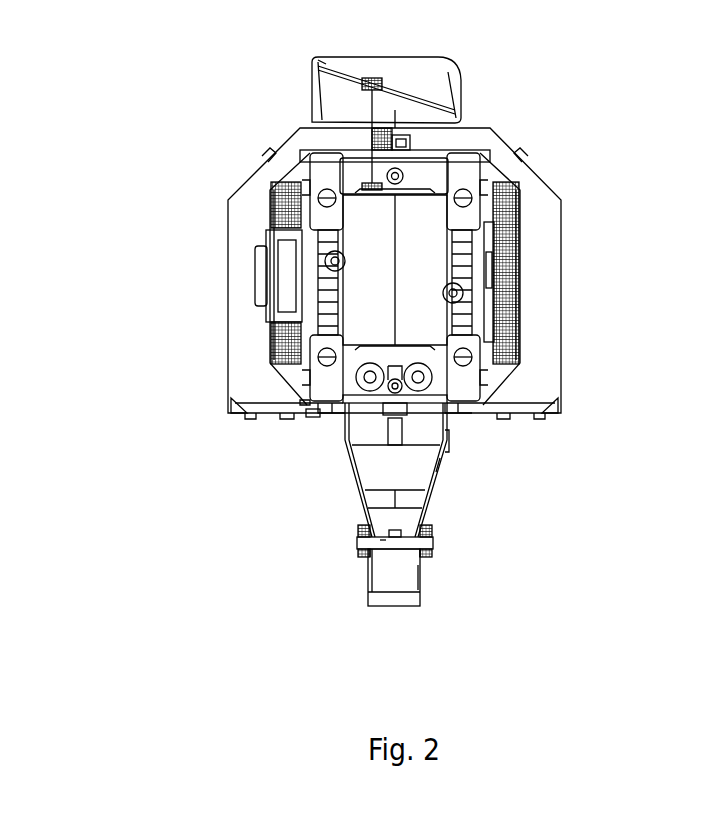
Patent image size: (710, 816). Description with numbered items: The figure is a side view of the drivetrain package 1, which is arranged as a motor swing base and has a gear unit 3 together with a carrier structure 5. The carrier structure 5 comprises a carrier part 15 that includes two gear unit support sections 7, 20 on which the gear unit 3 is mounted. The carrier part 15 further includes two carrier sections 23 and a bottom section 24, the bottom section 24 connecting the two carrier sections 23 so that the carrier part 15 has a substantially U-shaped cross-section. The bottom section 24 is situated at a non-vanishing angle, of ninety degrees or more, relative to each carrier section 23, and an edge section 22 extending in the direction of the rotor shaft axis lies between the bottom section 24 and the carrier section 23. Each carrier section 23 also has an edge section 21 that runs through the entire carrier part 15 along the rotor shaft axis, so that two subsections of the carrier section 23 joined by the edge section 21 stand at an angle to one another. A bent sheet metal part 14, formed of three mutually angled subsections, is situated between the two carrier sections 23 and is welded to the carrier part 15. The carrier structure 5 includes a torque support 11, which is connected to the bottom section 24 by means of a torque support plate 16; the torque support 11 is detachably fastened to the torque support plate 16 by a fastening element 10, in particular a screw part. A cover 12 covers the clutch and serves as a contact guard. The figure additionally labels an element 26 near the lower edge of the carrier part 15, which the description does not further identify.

The drivetrain package 1 is at (148, 432).
The gear unit 3 is at (465, 178).
The carrier structure 5 is at (497, 517).
The gear unit support section 7 is at (487, 400).
The fastening element 10 is at (365, 553).
The torque support 11 is at (407, 576).
The cover 12 is at (538, 268).
The sheet metal part 14 is at (416, 460).
The carrier part 15 is at (345, 450).
The torque support plate 16 is at (360, 540).
The gear unit support section 20 is at (305, 402).
The edge section 21 is at (449, 442).
The edge section 22 is at (424, 550).
The carrier section 23 is at (443, 470).
The bottom section 24 is at (383, 546).
The fastening element 26 is at (313, 414).